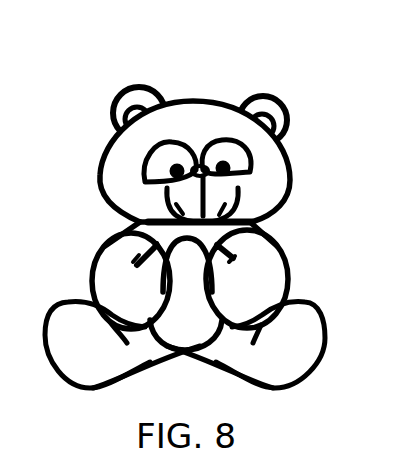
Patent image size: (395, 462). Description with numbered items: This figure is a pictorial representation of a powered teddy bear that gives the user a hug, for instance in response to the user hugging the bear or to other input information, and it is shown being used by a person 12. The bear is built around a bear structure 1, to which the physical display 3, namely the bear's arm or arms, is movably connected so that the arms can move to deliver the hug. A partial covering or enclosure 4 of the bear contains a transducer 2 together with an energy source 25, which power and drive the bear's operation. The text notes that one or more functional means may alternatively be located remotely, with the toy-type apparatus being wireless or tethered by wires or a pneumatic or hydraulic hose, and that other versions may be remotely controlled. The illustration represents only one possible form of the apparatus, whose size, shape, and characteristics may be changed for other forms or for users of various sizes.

The bear structure 1 is at (106, 157).
The person 12 is at (232, 104).
The partial covering or enclosure 4 is at (290, 192).
The physical display 3 is at (127, 268).
The transducer 2 is at (187, 268).
The energy source 25 is at (300, 268).